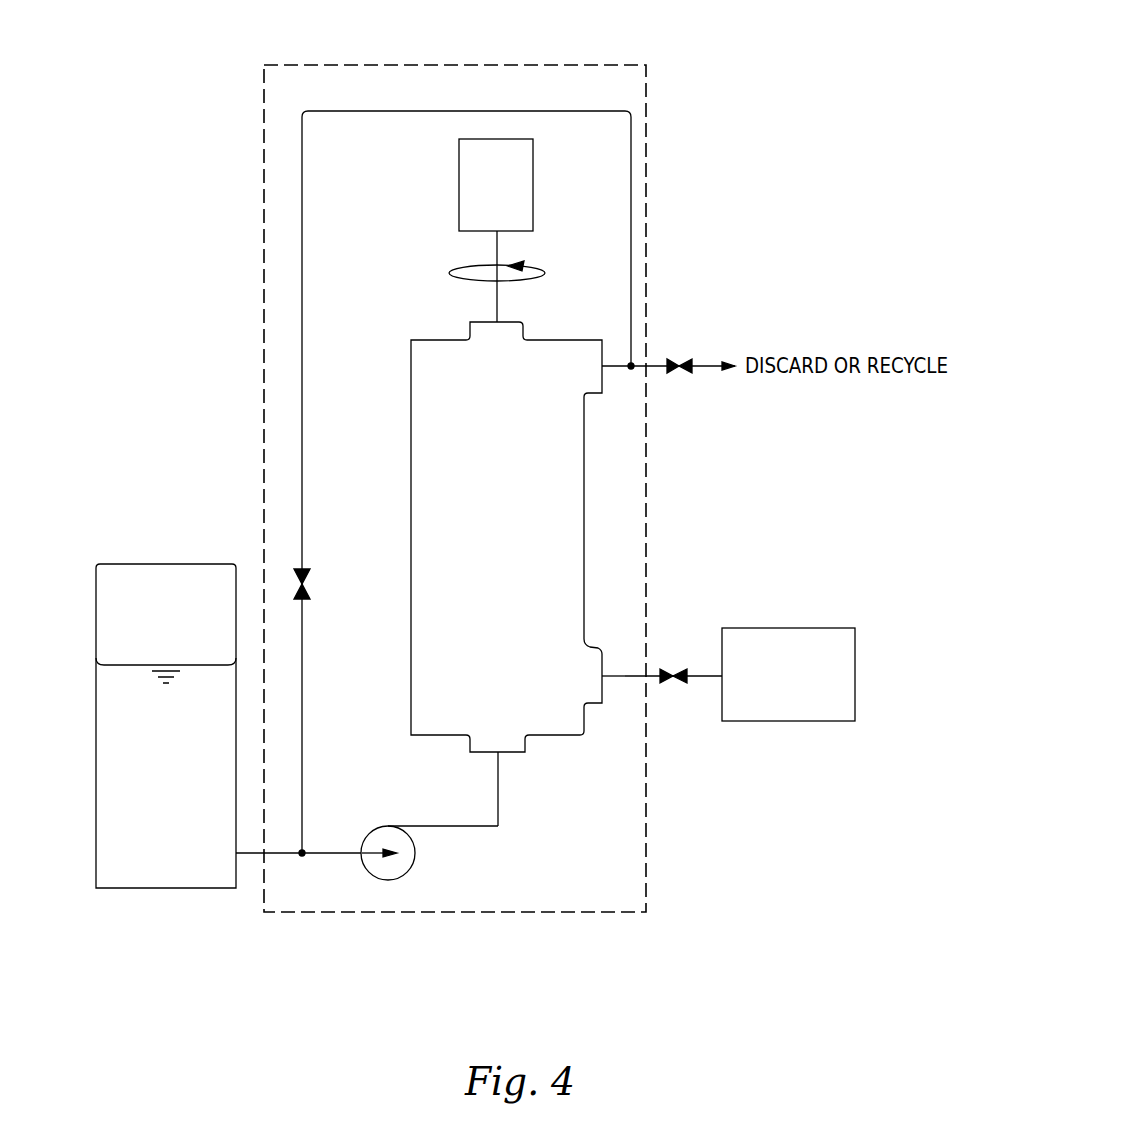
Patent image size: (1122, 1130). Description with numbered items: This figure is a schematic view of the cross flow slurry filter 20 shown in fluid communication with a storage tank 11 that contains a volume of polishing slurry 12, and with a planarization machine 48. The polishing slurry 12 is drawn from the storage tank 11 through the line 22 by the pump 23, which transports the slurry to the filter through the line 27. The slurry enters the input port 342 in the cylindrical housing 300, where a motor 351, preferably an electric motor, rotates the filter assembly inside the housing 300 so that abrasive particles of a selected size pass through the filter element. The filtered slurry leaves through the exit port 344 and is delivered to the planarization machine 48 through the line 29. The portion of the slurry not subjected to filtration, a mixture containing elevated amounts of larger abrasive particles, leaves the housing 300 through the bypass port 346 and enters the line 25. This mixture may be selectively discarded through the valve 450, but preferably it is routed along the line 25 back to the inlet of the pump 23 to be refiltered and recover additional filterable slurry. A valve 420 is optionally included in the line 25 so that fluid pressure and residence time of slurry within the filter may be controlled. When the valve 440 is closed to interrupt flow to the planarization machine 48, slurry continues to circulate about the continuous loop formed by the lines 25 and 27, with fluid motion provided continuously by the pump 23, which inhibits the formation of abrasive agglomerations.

The cross flow slurry filter 20 is at (645, 65).
The bypass line 25 is at (631, 213).
The valve 420 is at (303, 586).
The motor 351 is at (515, 197).
The cylindrical housing 300 is at (410, 460).
The bypass port 346 is at (603, 340).
The valve 450 is at (679, 358).
The exit port 344 is at (603, 648).
The line 29 is at (622, 680).
The valve 440 is at (673, 668).
The planarization machine 48 is at (803, 685).
The input port 342 is at (506, 753).
The line 27 is at (466, 827).
The pump 23 is at (372, 831).
The line 22 is at (280, 856).
The storage tank 11 is at (178, 563).
The polishing slurry 12 is at (174, 776).